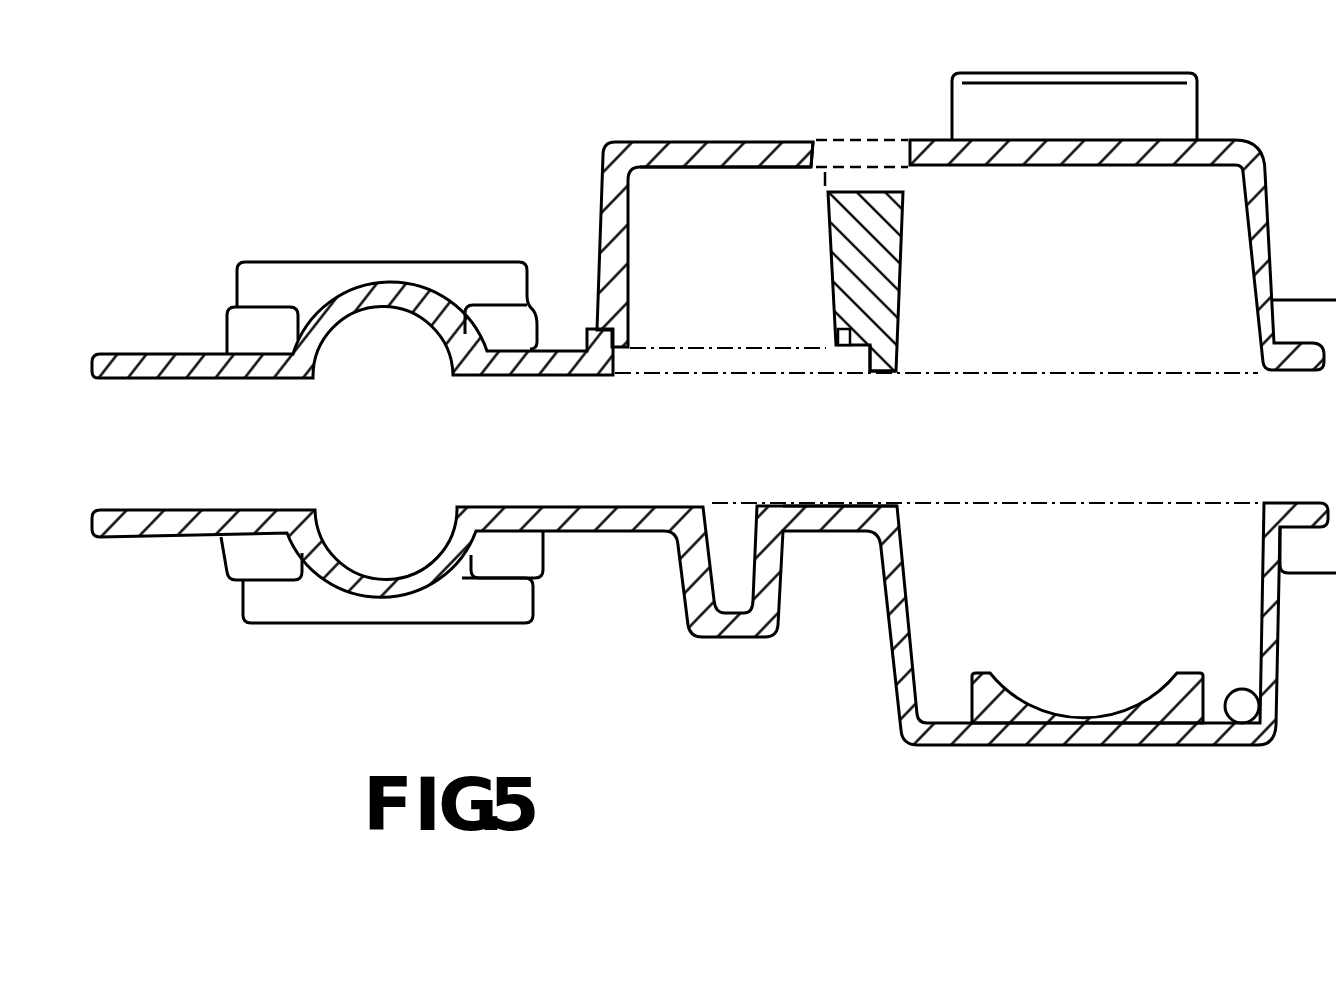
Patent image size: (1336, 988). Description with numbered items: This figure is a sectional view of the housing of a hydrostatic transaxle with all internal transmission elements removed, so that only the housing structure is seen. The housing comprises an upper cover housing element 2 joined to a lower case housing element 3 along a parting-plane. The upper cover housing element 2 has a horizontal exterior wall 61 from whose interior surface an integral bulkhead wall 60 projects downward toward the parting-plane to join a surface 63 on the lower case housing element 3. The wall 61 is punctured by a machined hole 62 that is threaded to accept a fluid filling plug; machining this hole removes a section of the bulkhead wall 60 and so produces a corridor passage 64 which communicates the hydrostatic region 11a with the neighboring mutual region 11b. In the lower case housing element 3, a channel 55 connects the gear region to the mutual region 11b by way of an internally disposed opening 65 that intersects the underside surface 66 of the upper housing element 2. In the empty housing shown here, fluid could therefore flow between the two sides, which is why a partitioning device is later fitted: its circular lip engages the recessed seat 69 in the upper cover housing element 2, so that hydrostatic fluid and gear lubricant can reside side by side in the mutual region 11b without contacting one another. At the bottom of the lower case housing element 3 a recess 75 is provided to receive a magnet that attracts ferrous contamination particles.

The upper cover housing element 2 is at (1083, 129).
The lower case housing element 3 is at (1072, 727).
The region 11a is at (1123, 255).
The mutual region 11b is at (705, 244).
The channel 55 is at (727, 560).
The bulkhead wall 60 is at (857, 253).
The horizontal exterior wall 61 is at (743, 170).
The machined hole 62 is at (822, 150).
The surface 63 is at (793, 504).
The corridor passage 64 is at (855, 178).
The opening 65 is at (864, 357).
The underside surface 66 is at (555, 373).
The recessed seat 69 is at (593, 333).
The recess 75 is at (1268, 746).